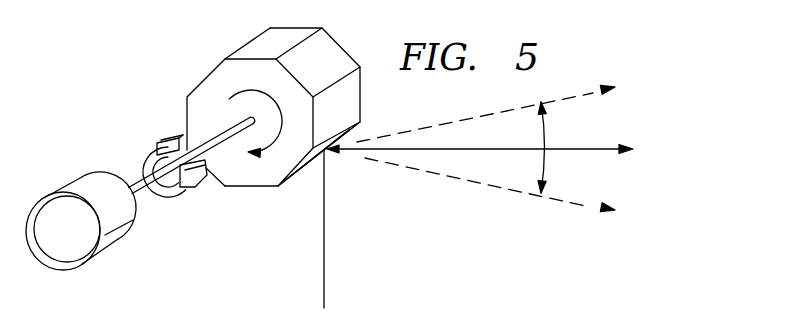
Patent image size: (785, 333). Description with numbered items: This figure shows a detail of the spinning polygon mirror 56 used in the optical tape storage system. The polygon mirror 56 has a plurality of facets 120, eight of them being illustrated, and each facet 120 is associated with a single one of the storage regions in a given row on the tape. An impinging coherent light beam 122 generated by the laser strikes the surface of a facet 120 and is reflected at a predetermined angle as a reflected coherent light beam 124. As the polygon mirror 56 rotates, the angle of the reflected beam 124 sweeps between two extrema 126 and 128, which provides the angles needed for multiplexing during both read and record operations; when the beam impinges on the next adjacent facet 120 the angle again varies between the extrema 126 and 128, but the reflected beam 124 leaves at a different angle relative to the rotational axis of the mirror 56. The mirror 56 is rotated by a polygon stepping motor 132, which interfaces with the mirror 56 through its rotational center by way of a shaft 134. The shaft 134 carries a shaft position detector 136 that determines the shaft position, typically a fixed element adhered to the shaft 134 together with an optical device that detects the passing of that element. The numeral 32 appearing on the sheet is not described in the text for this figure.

The scanner assembly 32 is at (14, 25).
The spinning polygon mirror 56 is at (213, 80).
The facets 120 is at (335, 53).
The impinging coherent light beam 122 is at (322, 263).
The reflected coherent light beam 124 is at (605, 147).
The extrema 126 is at (582, 90).
The extrema 128 is at (582, 207).
The polygon stepping motor 132 is at (120, 235).
The shaft 134 is at (130, 183).
The shaft position detector 136 is at (162, 147).